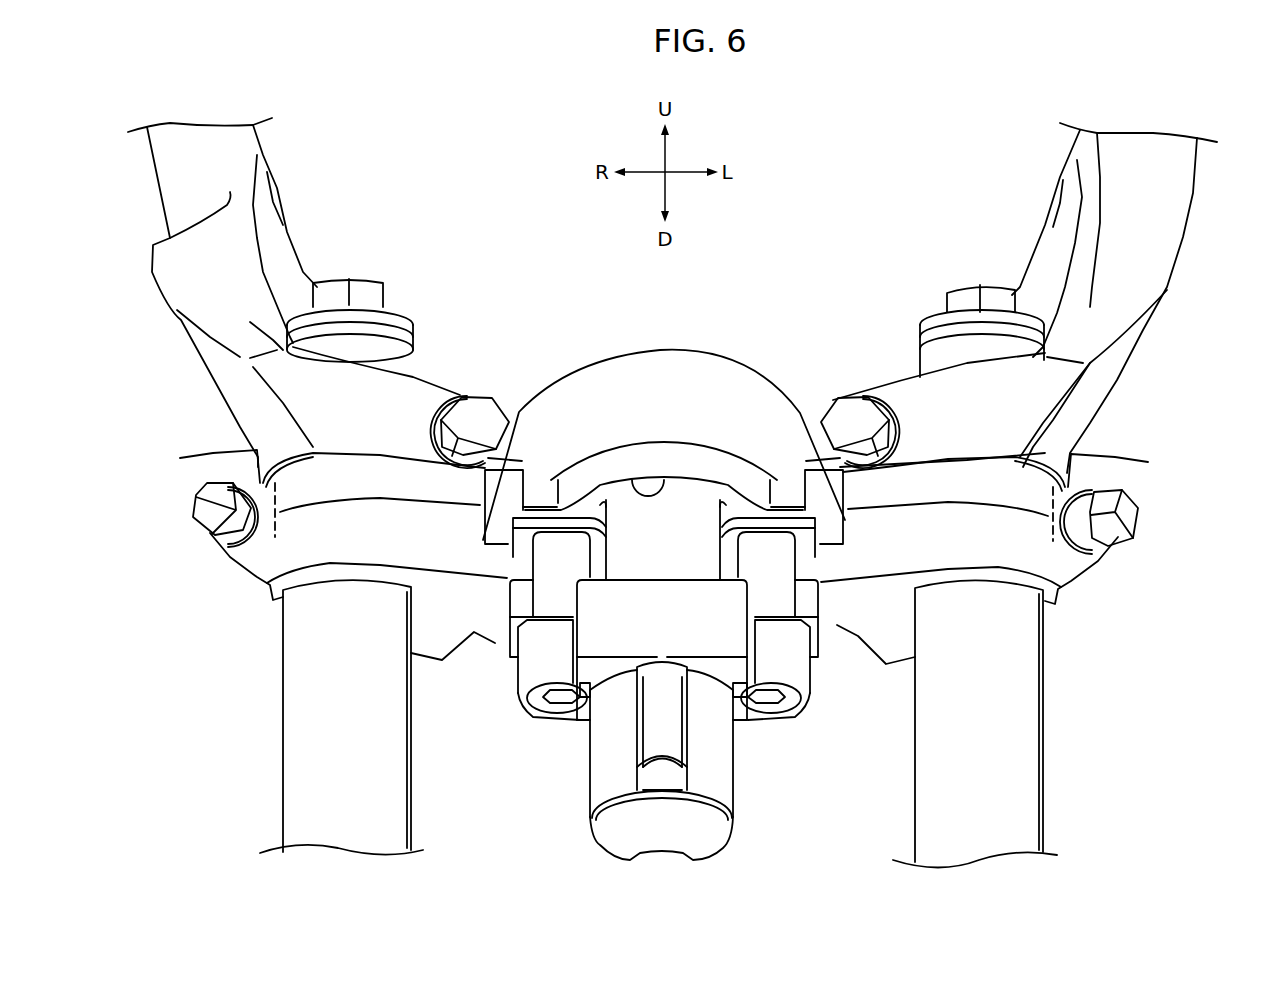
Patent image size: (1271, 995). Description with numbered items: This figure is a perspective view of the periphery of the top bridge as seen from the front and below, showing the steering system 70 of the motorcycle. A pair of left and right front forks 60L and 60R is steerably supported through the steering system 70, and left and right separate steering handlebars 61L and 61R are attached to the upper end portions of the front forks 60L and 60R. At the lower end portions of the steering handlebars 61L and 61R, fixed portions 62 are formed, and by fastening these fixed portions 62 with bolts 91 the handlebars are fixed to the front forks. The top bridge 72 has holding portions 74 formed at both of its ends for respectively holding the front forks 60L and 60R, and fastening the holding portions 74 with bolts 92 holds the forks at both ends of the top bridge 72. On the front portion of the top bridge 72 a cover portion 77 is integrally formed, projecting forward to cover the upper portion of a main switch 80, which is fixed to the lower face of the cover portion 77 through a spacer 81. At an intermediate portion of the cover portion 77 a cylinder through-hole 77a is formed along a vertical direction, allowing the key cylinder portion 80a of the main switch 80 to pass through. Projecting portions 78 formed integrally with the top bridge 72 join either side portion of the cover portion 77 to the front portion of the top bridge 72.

The right front fork 60R is at (305, 731).
The left front fork 60L is at (1021, 738).
The right steering handlebar 61R is at (178, 185).
The left steering handlebar 61L is at (1167, 232).
The fixed portion 62 is at (427, 397).
The steering system 70 is at (664, 397).
The top bridge 72 is at (838, 627).
The holding portion 74 is at (255, 450).
The cover portion 77 is at (713, 385).
The cylinder through-hole 77a is at (633, 490).
The projecting portion 78 is at (507, 493).
The main switch 80 is at (660, 717).
The key cylinder portion 80a is at (640, 562).
The spacer 81 is at (550, 590).
The bolt 91 is at (480, 420).
The bolt 92 is at (205, 502).